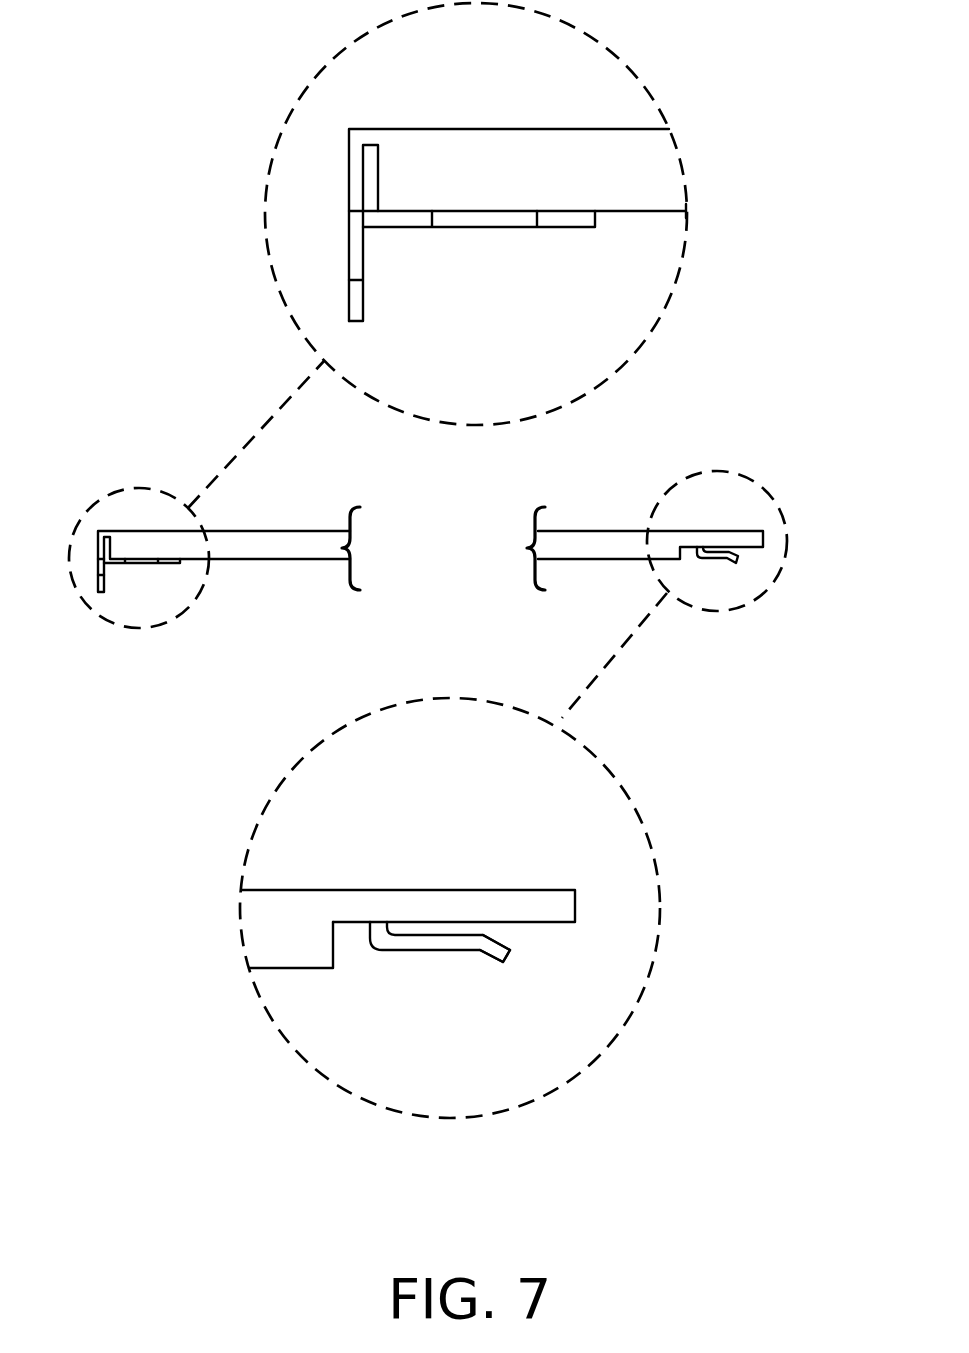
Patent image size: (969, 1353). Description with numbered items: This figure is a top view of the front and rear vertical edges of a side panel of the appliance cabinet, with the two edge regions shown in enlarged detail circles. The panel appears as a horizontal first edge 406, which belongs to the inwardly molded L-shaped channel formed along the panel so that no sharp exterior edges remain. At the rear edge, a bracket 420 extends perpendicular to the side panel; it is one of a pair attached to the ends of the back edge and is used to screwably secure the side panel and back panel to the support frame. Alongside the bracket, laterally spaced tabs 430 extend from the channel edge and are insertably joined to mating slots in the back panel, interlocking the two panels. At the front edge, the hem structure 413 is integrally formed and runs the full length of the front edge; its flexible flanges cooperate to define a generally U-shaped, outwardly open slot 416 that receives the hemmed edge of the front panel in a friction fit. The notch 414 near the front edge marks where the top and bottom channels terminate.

The horizontal first edge 406 is at (475, 146).
The bracket 420 is at (353, 250).
The tab 430 is at (482, 220).
The hem structure 413 is at (433, 948).
The notch 414 is at (350, 943).
The slot 416 is at (502, 934).